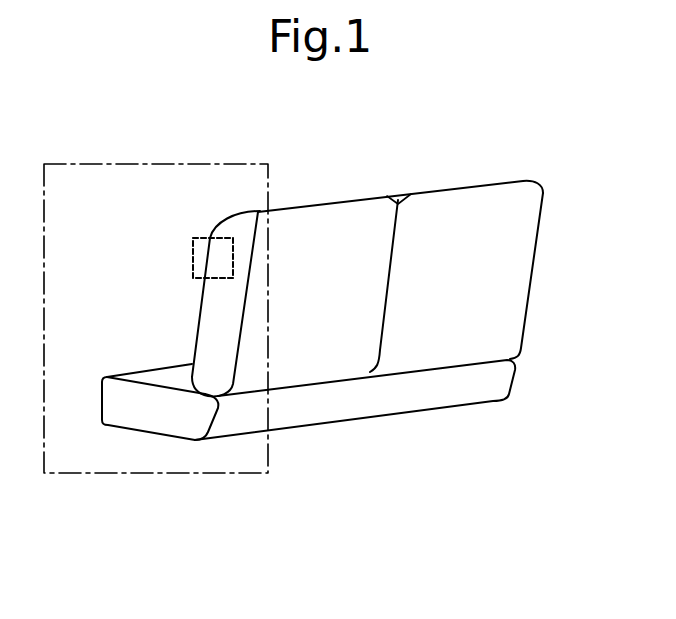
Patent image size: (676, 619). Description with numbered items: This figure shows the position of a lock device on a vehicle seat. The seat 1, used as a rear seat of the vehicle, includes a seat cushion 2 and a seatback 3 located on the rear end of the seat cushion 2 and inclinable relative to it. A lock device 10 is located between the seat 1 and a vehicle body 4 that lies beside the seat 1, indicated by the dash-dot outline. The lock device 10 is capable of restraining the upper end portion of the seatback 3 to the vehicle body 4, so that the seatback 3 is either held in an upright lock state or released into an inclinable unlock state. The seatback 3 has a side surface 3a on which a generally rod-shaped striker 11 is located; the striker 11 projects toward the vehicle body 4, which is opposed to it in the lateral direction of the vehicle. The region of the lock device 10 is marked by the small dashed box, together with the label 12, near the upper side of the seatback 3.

The seat 1 is at (480, 186).
The seat cushion 2 is at (393, 408).
The seatback 3 is at (522, 243).
The side surface 3a is at (213, 323).
The vehicle body 4 is at (105, 164).
The lock device 10 is at (193, 263).
The striker 11 is at (213, 258).
The controller 12 is at (213, 258).